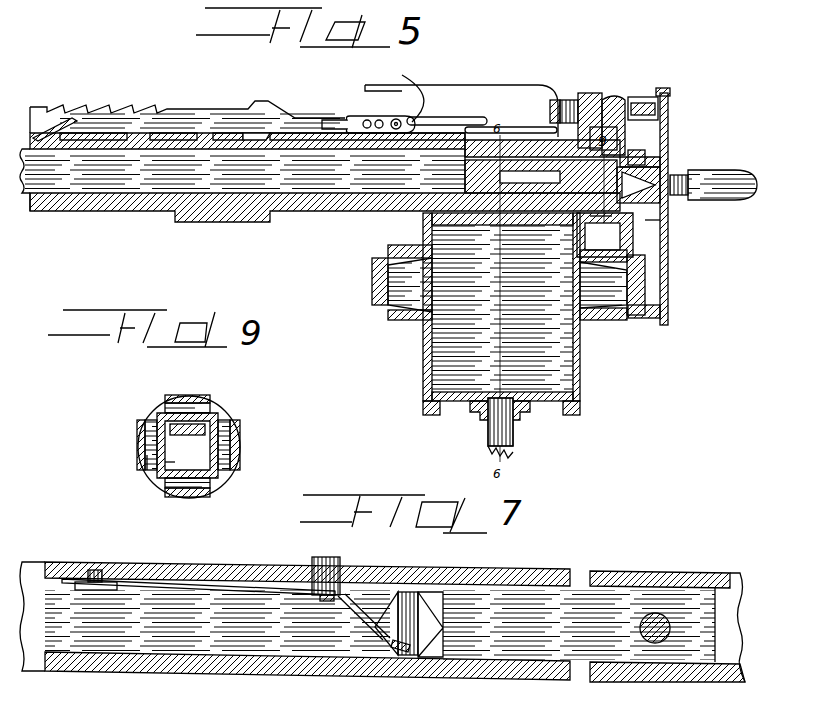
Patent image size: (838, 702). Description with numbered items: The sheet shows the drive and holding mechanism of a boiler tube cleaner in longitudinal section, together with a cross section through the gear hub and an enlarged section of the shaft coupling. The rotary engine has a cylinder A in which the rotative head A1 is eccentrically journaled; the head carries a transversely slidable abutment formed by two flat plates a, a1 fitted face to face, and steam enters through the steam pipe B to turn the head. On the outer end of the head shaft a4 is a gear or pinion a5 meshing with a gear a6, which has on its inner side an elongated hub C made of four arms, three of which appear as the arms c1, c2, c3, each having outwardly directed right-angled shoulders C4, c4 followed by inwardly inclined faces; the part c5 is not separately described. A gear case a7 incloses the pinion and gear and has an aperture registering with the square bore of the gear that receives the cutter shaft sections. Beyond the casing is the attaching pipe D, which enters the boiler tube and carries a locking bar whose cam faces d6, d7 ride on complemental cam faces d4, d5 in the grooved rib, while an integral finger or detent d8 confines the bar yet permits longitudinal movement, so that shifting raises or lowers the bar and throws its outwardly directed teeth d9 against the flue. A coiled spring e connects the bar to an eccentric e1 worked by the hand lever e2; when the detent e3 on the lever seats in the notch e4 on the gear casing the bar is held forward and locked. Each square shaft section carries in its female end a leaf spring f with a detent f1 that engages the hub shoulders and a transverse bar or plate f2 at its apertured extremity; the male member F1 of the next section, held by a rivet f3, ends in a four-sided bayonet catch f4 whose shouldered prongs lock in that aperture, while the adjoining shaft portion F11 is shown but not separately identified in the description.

In FIG. 5, the attaching pipe D is at (330, 107).
In FIG. 5, the male member F1 is at (745, 185).
In FIG. 9, the male member F1 is at (160, 468).
In FIG. 7, the male member F1 is at (660, 578).
In FIG. 5, the rod extension F11 is at (690, 212).
In FIG. 7, the rod extension F11 is at (512, 607).
In FIG. 5, the cam face d4 is at (190, 130).
In FIG. 5, the cam face d5 is at (263, 133).
In FIG. 5, the cam face d6 is at (167, 132).
In FIG. 5, the cam face d7 is at (232, 128).
In FIG. 5, the finger or detent d8 is at (50, 127).
In FIG. 5, the outwardly directed teeth d9 is at (78, 107).
In FIG. 5, the spring e is at (471, 106).
In FIG. 5, the eccentric e1 is at (597, 110).
In FIG. 5, the hand lever e2 is at (513, 72).
In FIG. 5, the detent e3 is at (439, 111).
In FIG. 5, the notch e4 is at (667, 90).
In FIG. 5, the flat plate a is at (440, 322).
In FIG. 5, the flat plate a1 is at (447, 288).
In FIG. 5, the shaft a4 is at (643, 282).
In FIG. 5, the gear or pinion a5 is at (660, 305).
In FIG. 5, the gear a6 is at (627, 117).
In FIG. 5, the gear case a7 is at (657, 150).
In FIG. 5, the cylinder A is at (577, 357).
In FIG. 5, the rotative head A1 is at (485, 262).
In FIG. 5, the steam pipe B is at (510, 433).
In FIG. 5, the elongated hub C is at (655, 205).
In FIG. 9, the elongated hub C is at (137, 440).
In FIG. 5, the shoulders C4 is at (650, 222).
In FIG. 9, the arm c1 is at (187, 397).
In FIG. 9, the arm c2 is at (218, 438).
In FIG. 9, the arm c3 is at (188, 497).
In FIG. 9, the shoulders c4 is at (220, 403).
In FIG. 5, the left plate c5 is at (668, 232).
In FIG. 9, the left plate c5 is at (140, 455).
In FIG. 5, the leaf spring f is at (587, 172).
In FIG. 9, the leaf spring f is at (197, 442).
In FIG. 7, the leaf spring f is at (265, 590).
In FIG. 5, the detent f1 is at (668, 160).
In FIG. 7, the detent f1 is at (312, 548).
In FIG. 7, the transverse bar or plate f2 is at (412, 641).
In FIG. 7, the rivet f3 is at (662, 618).
In FIG. 5, the bayonet catch f4 is at (700, 172).
In FIG. 7, the bayonet catch f4 is at (388, 622).